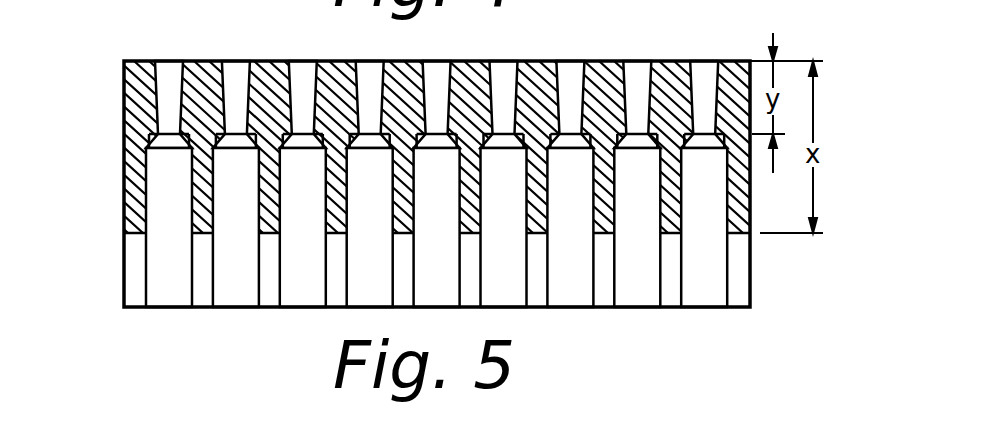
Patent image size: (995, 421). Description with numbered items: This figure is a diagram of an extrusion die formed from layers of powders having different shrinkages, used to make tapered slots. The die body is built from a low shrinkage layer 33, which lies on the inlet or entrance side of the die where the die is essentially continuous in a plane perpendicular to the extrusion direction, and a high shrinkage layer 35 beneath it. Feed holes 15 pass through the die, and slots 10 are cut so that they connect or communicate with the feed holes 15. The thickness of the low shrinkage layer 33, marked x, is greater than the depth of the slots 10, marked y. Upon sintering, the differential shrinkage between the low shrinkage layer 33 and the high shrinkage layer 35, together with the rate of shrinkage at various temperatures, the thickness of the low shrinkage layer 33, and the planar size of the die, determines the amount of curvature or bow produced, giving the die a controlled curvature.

The slots 10 is at (705, 64).
The feed holes 15 is at (695, 288).
The low shrinkage layer 33 is at (469, 147).
The high shrinkage layer 35 is at (393, 184).